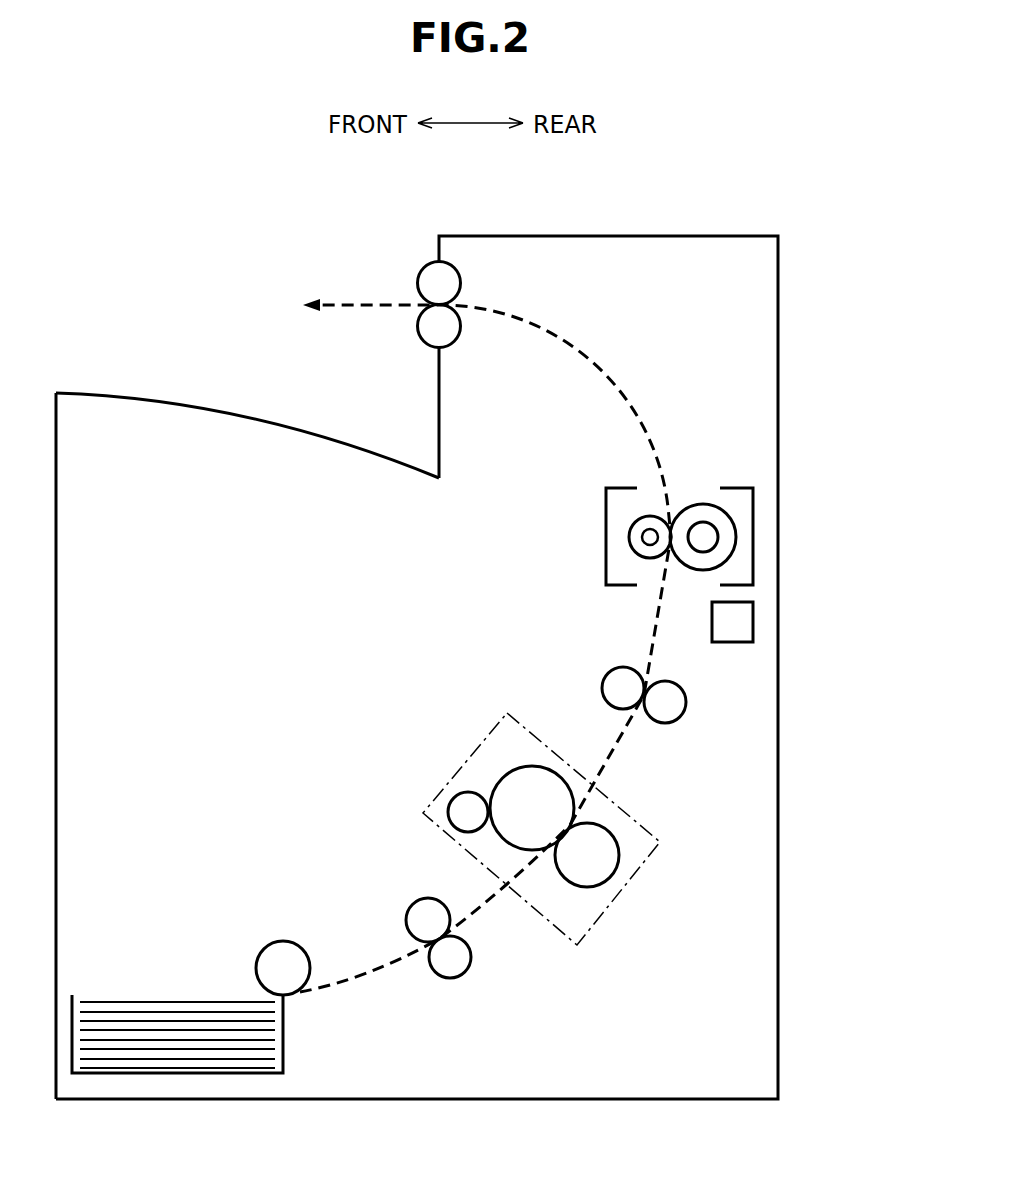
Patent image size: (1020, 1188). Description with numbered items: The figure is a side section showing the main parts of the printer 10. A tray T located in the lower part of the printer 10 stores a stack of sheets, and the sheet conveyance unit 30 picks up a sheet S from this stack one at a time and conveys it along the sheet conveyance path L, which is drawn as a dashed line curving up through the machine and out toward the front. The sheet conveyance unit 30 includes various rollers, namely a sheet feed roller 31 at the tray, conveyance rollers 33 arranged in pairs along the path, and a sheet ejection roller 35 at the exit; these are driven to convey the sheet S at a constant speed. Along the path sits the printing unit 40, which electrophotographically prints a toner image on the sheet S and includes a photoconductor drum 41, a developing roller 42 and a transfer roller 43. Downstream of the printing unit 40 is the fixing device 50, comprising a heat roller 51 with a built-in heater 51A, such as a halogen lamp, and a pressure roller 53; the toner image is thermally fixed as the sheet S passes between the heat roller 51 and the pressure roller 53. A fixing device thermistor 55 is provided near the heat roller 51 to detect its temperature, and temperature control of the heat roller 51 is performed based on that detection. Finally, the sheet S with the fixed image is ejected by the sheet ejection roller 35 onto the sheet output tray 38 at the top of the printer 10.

The printer 10 is at (157, 230).
The sheet conveyance unit 30 is at (284, 1005).
The sheet feed roller 31 is at (280, 952).
The conveyance roller 33 is at (677, 695).
The sheet ejection roller 35 is at (430, 325).
The sheet output tray 38 is at (235, 414).
The printing unit 40 is at (606, 829).
The photoconductor drum 41 is at (508, 787).
The developing roller 42 is at (455, 805).
The transfer roller 43 is at (605, 863).
The fixing device 50 is at (751, 537).
The heat roller 51 is at (658, 518).
The built-in heater 51A is at (652, 542).
The pressure roller 53 is at (735, 532).
The fixing device thermistor 55 is at (747, 622).
The sheet conveyance path L is at (590, 352).
The sheet S is at (145, 1002).
The tray T is at (283, 1058).